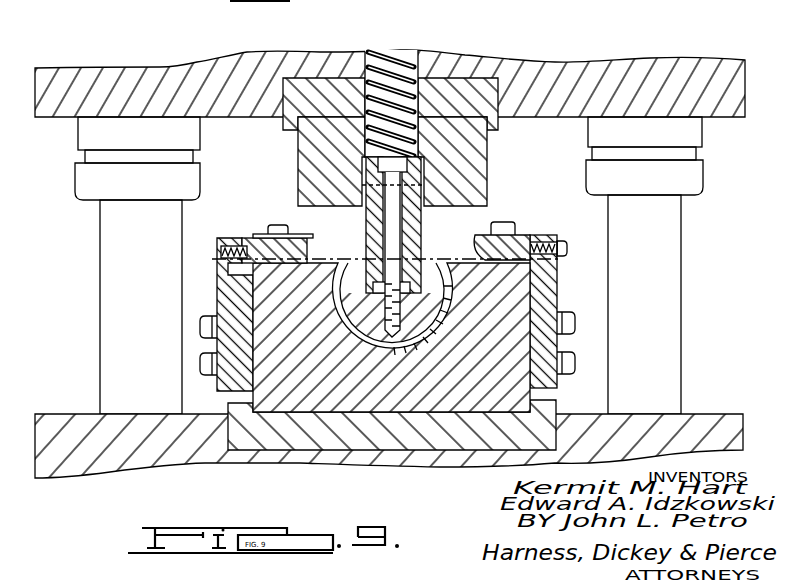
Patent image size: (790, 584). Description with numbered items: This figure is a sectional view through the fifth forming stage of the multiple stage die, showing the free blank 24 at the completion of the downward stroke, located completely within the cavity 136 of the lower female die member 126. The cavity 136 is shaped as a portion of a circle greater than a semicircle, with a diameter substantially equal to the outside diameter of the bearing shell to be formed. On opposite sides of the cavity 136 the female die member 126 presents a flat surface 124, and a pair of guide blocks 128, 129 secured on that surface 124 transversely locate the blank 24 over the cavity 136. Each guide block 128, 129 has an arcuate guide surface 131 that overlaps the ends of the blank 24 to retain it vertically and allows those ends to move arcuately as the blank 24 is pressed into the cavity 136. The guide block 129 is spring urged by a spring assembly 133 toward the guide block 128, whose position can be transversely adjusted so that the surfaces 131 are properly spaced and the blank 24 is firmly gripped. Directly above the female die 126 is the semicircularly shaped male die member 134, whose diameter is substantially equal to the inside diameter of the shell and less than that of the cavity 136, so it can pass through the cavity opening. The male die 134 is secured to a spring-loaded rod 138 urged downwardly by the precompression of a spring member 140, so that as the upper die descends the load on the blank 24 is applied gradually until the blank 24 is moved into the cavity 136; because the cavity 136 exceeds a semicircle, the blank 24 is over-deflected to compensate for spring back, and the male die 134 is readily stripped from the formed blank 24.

The spring member 140 is at (398, 53).
The spring-loaded rod 138 is at (470, 153).
The flat surface 124 is at (490, 213).
The guide block 128 is at (525, 234).
The guide block 129 is at (258, 234).
The spring assembly 133 is at (238, 241).
The cavity 136 is at (339, 298).
The male die member 134 is at (423, 296).
The arcuate guide surface 131 is at (300, 268).
The lower female die member 126 is at (524, 283).
The free blank 24 is at (400, 361).